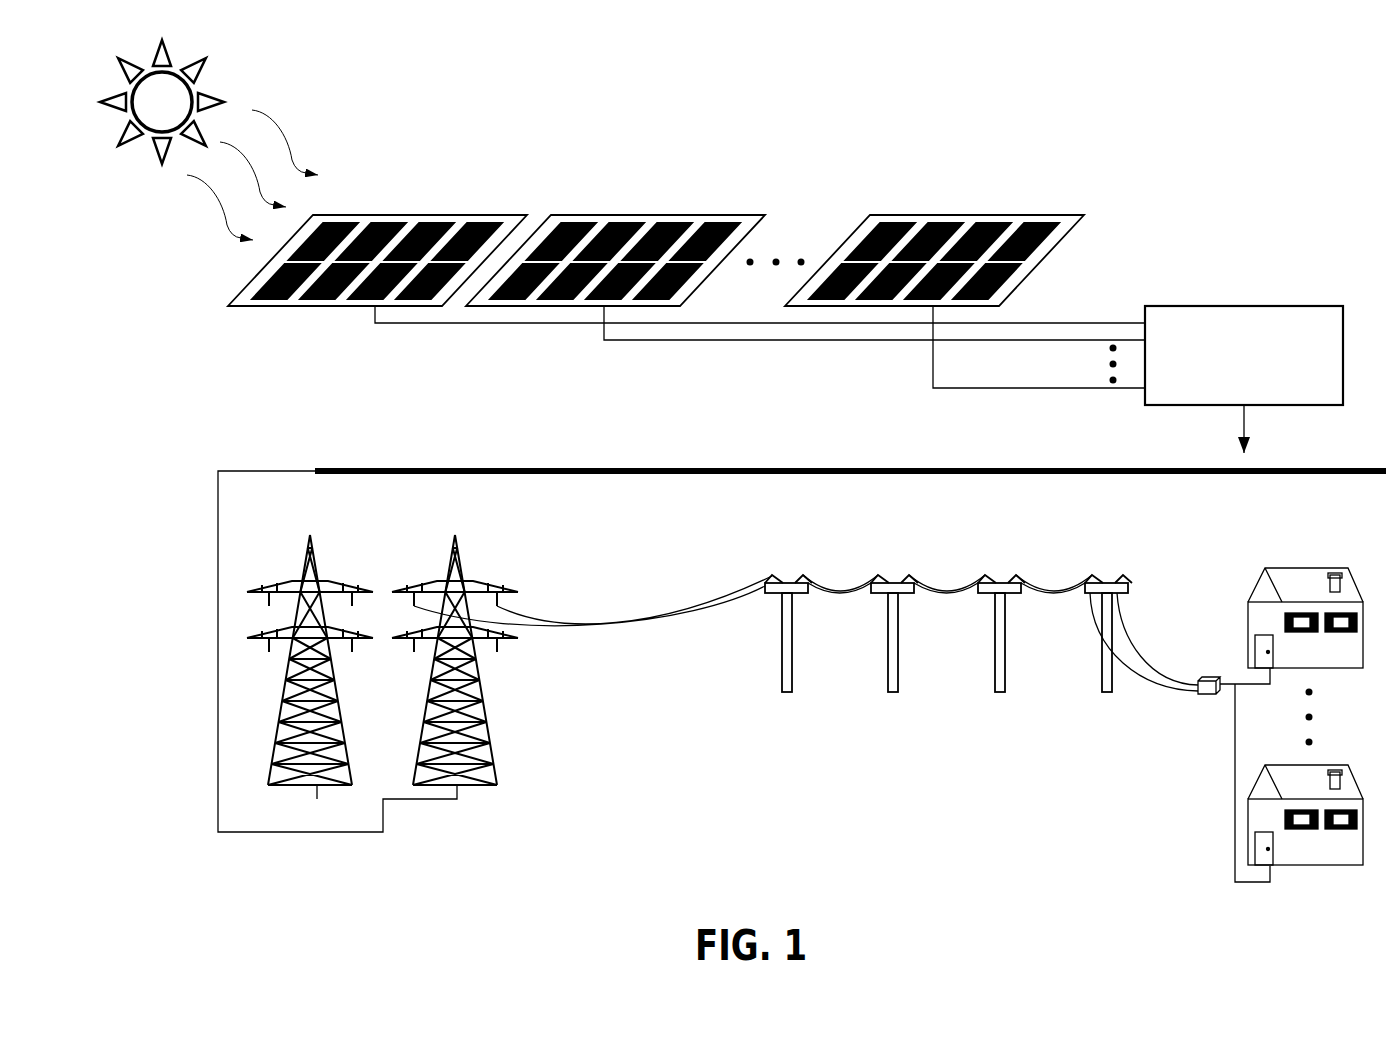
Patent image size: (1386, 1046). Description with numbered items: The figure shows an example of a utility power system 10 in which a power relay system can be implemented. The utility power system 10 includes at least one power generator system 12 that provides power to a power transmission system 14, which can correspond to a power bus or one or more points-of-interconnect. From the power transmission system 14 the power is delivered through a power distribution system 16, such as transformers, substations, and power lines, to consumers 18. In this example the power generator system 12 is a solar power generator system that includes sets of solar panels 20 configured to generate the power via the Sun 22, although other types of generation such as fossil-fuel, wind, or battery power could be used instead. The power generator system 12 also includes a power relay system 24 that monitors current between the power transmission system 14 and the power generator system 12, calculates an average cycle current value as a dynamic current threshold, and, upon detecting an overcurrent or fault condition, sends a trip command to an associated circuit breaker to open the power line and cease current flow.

The utility power system 10 is at (1265, 103).
The power generator system 12 is at (686, 290).
The power transmission system 14 is at (877, 468).
The power distribution system 16 is at (557, 752).
The consumers 18 is at (1220, 571).
The solar panels 20 is at (468, 215).
The Sun 22 is at (152, 198).
The power relay system 24 is at (1257, 306).